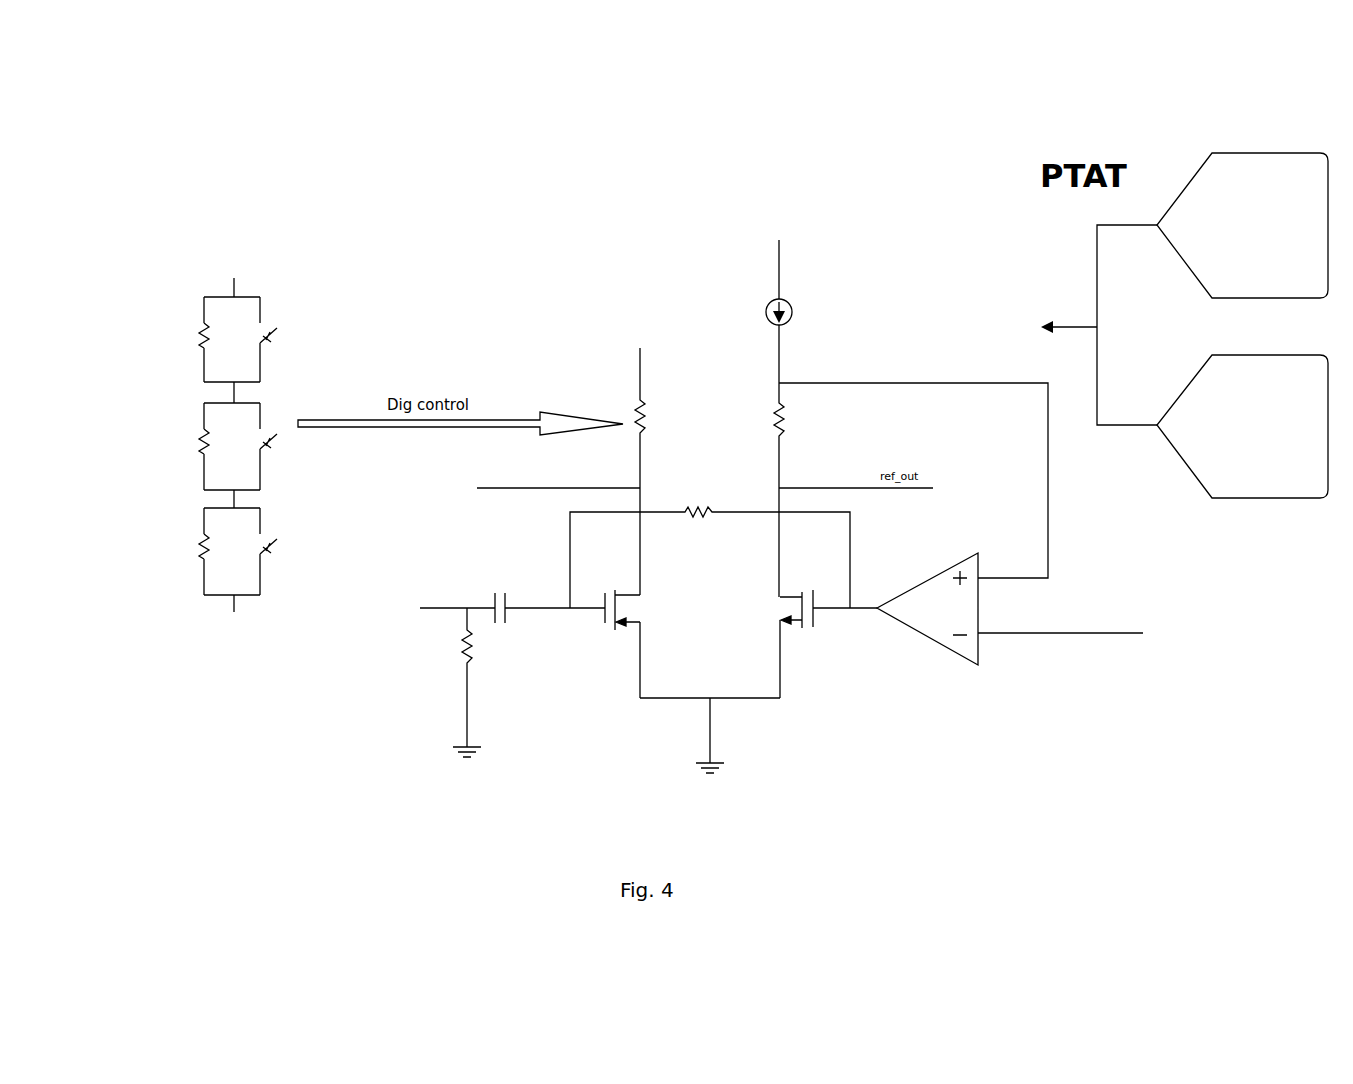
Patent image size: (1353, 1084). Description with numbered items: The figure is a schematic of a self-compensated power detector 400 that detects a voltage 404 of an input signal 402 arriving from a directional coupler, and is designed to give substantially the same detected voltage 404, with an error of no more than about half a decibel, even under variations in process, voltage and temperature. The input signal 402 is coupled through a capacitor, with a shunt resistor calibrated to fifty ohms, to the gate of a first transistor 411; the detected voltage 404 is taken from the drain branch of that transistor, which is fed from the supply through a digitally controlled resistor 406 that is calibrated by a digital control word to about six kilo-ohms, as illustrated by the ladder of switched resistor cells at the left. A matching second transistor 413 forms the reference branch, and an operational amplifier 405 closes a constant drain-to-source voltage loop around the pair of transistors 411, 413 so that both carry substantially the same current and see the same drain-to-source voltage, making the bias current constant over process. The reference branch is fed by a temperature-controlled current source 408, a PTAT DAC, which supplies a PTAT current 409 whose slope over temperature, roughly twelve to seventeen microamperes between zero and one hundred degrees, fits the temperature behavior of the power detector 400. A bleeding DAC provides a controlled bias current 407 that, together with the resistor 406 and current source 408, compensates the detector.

The power detector 400 is at (155, 647).
The input signal 402 is at (435, 612).
The detected voltage 404 is at (543, 492).
The operational amplifier 405 is at (990, 685).
The digitally controlled resistor 406 is at (613, 365).
The controlled bias current 407 is at (1255, 356).
The temperature-controlled current source 408 is at (1268, 155).
The PTAT current 409 is at (783, 282).
The transistor 411 is at (615, 647).
The transistor 413 is at (814, 642).